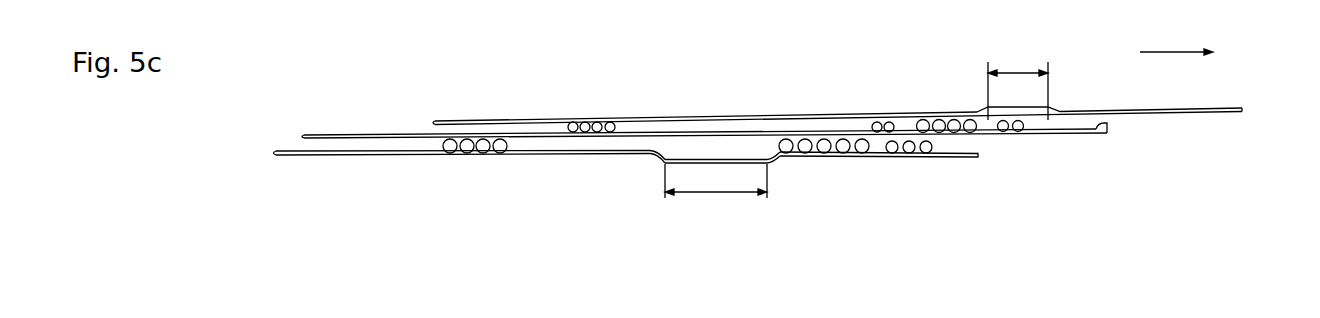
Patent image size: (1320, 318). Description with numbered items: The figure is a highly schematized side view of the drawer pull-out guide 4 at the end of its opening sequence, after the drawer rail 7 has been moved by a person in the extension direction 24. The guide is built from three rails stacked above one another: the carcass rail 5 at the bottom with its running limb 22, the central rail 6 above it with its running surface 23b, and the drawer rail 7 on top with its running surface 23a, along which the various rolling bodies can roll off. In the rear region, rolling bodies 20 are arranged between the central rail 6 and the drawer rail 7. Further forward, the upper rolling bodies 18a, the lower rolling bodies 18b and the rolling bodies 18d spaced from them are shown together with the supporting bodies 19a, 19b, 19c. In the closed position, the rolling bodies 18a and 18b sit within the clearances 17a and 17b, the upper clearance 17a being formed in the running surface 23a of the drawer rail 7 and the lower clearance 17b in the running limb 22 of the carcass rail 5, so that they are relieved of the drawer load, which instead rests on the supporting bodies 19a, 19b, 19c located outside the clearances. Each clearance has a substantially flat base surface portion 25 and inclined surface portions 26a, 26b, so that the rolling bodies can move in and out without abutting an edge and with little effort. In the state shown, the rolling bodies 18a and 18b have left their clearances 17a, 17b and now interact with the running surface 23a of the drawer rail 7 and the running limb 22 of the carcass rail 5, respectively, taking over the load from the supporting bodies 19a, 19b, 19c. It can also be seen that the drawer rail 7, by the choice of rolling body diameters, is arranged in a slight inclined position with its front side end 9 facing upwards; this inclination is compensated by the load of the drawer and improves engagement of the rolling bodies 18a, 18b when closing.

The drawer pull-out guide 4 is at (283, 175).
The carcass rail 5 is at (273, 153).
The central rail 6 is at (302, 137).
The drawer rail 7 is at (432, 122).
The front side end of the drawer rail 9 is at (1242, 108).
The upper clearance 17a is at (1109, 78).
The lower clearance 17b is at (716, 196).
The upper rolling bodies 18a is at (970, 119).
The lower rolling bodies 18b is at (786, 153).
The rolling bodies 18d is at (500, 153).
The supporting body 19a is at (1003, 120).
The supporting body 19b is at (892, 153).
The supporting body 19c is at (889, 121).
The rolling bodies 20 is at (610, 122).
The running limb 22 is at (976, 151).
The running surface of the drawer rail 23a is at (756, 122).
The running surface of the central rail 23b is at (1104, 125).
The extension direction 24 is at (1176, 36).
The flat base surface portion 25 is at (695, 159).
The inclined surface portion 26a is at (658, 164).
The inclined surface portion 26b is at (777, 165).